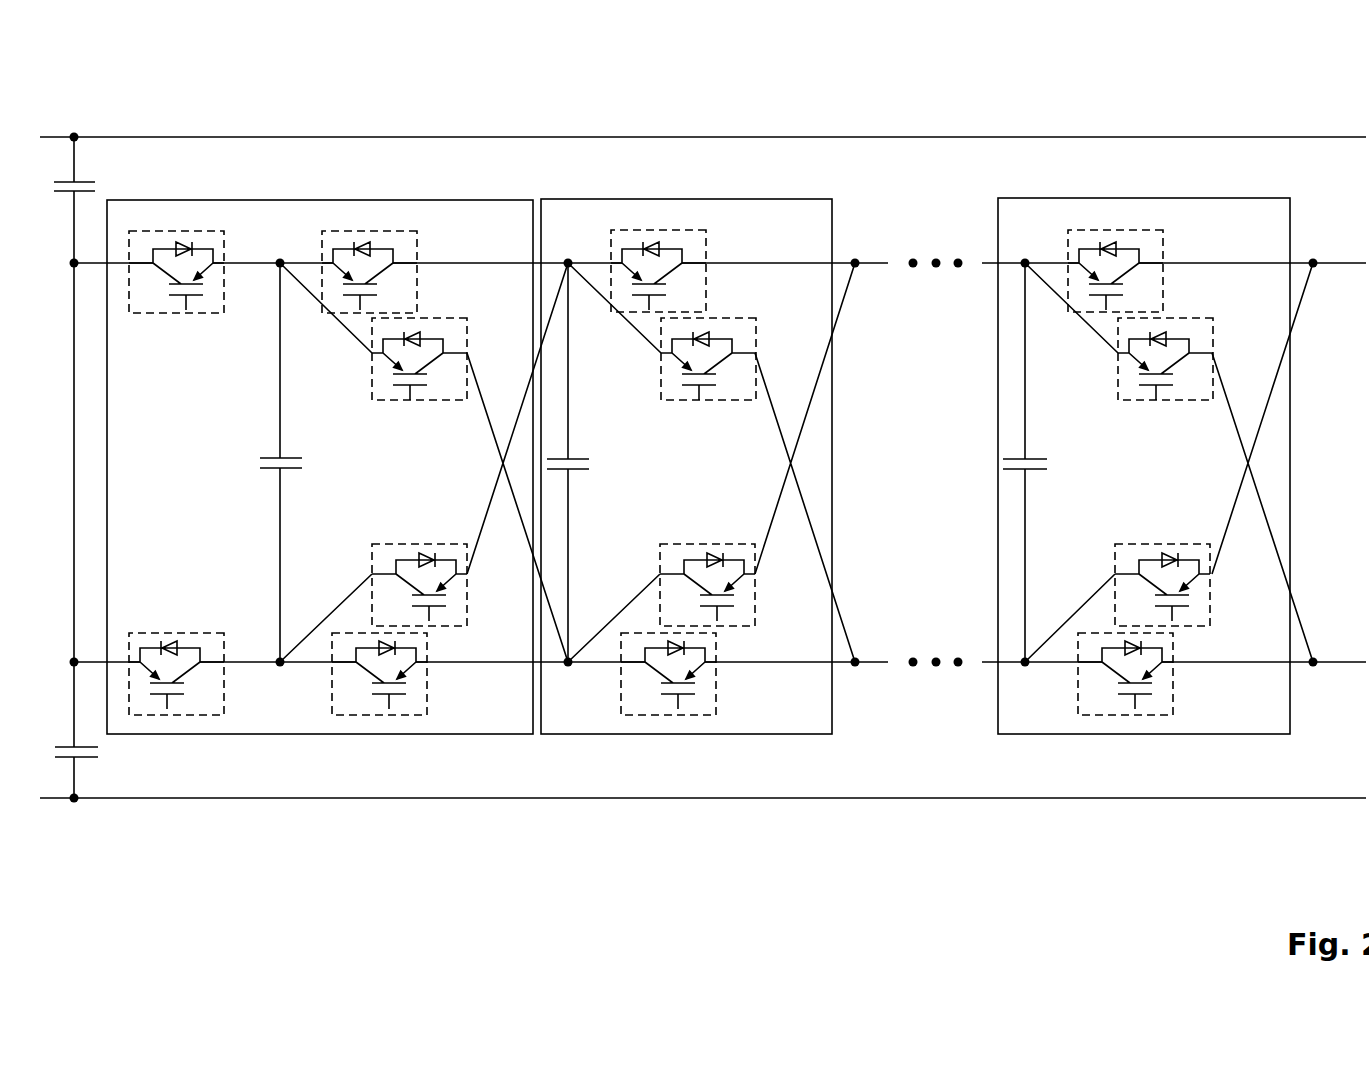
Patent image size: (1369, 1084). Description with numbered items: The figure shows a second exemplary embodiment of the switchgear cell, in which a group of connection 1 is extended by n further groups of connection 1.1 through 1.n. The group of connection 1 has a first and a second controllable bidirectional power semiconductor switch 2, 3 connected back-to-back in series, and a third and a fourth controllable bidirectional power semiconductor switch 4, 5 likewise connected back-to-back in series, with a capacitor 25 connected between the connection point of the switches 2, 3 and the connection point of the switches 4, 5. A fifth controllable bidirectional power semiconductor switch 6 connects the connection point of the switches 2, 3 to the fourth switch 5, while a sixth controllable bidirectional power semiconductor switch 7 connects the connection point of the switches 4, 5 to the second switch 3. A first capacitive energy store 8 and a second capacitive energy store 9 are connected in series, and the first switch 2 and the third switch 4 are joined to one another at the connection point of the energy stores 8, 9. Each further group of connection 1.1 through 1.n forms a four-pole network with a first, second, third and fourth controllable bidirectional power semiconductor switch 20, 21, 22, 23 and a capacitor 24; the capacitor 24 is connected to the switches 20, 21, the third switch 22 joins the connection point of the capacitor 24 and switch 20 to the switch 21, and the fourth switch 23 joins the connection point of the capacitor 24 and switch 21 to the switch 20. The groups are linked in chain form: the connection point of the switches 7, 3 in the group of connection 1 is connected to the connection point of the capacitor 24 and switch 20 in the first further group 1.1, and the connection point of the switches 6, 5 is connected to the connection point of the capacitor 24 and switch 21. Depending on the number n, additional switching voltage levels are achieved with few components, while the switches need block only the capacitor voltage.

The group of connection 1 is at (348, 199).
The first further group of connection 1.1 is at (812, 199).
The n-th further group of connection 1.n is at (1272, 198).
The first controllable bidirectional power semiconductor switch 2 is at (162, 231).
The second controllable bidirectional power semiconductor switch 3 is at (412, 231).
The third controllable bidirectional power semiconductor switch 4 is at (197, 715).
The fourth controllable bidirectional power semiconductor switch 5 is at (380, 715).
The fifth controllable bidirectional power semiconductor switch 6 is at (460, 318).
The sixth controllable bidirectional power semiconductor switch 7 is at (455, 626).
The first capacitive energy store 8 is at (85, 182).
The second capacitive energy store 9 is at (98, 757).
The first controllable bidirectional power semiconductor switch 20 is at (630, 230).
The second controllable bidirectional power semiconductor switch 21 is at (645, 715).
The third controllable bidirectional power semiconductor switch 22 is at (728, 318).
The fourth controllable bidirectional power semiconductor switch 23 is at (745, 626).
The capacitor 24 is at (582, 458).
The capacitor 25 is at (299, 458).